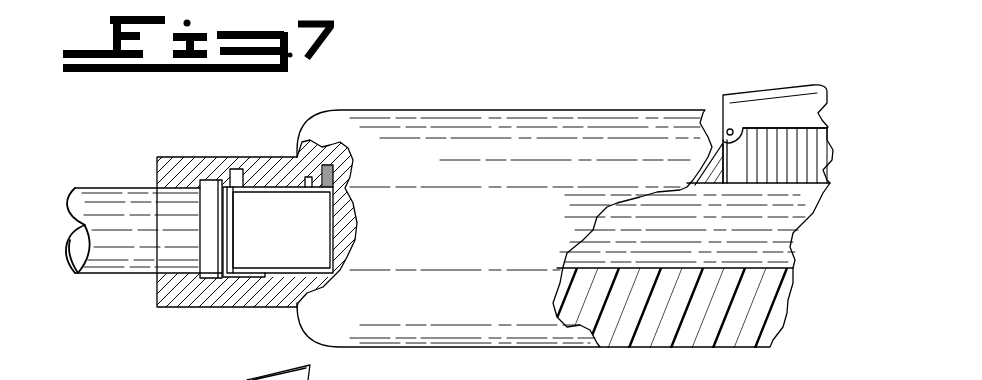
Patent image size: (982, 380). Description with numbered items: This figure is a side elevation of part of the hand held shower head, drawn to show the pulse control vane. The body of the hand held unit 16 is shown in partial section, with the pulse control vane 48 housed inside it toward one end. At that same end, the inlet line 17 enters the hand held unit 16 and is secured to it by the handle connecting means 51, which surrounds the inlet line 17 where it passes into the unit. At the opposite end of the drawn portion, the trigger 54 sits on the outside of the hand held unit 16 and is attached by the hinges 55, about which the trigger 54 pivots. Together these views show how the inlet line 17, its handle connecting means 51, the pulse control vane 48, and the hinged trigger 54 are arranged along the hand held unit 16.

The hand held unit 16 is at (415, 176).
The inlet line 17 is at (91, 197).
The handle connecting means 51 is at (211, 218).
The pulse control vane 48 is at (295, 237).
The trigger 54 is at (808, 115).
The hinges 55 is at (733, 132).